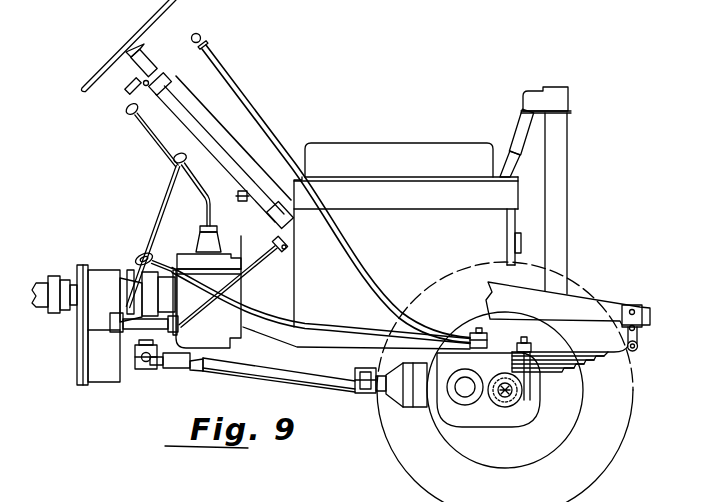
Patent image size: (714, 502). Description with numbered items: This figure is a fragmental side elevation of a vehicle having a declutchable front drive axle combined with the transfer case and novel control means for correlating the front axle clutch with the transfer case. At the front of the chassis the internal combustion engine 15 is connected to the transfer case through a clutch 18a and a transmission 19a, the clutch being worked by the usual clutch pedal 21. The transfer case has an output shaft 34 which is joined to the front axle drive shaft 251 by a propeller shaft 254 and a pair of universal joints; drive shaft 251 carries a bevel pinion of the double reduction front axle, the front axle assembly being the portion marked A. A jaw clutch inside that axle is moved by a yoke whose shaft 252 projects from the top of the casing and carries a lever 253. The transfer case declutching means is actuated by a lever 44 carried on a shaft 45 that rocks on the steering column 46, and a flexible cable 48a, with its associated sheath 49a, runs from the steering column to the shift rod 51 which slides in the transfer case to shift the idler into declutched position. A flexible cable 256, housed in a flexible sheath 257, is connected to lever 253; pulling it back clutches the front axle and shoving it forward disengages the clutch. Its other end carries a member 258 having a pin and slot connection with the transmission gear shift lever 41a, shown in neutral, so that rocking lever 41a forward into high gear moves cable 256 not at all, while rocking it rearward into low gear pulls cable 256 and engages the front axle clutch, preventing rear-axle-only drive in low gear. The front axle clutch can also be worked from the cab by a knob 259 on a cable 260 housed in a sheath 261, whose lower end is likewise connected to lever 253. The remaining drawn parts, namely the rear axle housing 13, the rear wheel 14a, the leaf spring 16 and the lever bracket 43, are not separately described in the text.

The rear axle housing 13 is at (505, 426).
The rear wheel 14a is at (617, 446).
The internal combustion engine 15 is at (437, 147).
The leaf spring 16 is at (555, 372).
The clutch 18a is at (272, 247).
The transmission 19a is at (175, 268).
The clutch pedal 21 is at (238, 194).
The output shaft 34 is at (137, 368).
The transmission gear shift lever 41a is at (157, 214).
The lever bracket 43 is at (126, 300).
The lever 44 is at (124, 93).
The shaft 45 is at (184, 108).
The steering column 46 is at (226, 137).
The flexible cable 48a is at (179, 336).
The drag link 49a is at (243, 282).
The shift rod 51 is at (132, 338).
The drive shaft 251 is at (360, 390).
The shaft 252 is at (410, 356).
The lever 253 is at (490, 343).
The propeller shaft 254 is at (280, 375).
The flexible cable 256 is at (477, 330).
The flexible sheath 257 is at (322, 326).
The member 258 is at (138, 258).
The knob 259 is at (200, 35).
The cable 260 is at (208, 42).
The sheath 261 is at (357, 270).
The front axle assembly A is at (104, 346).